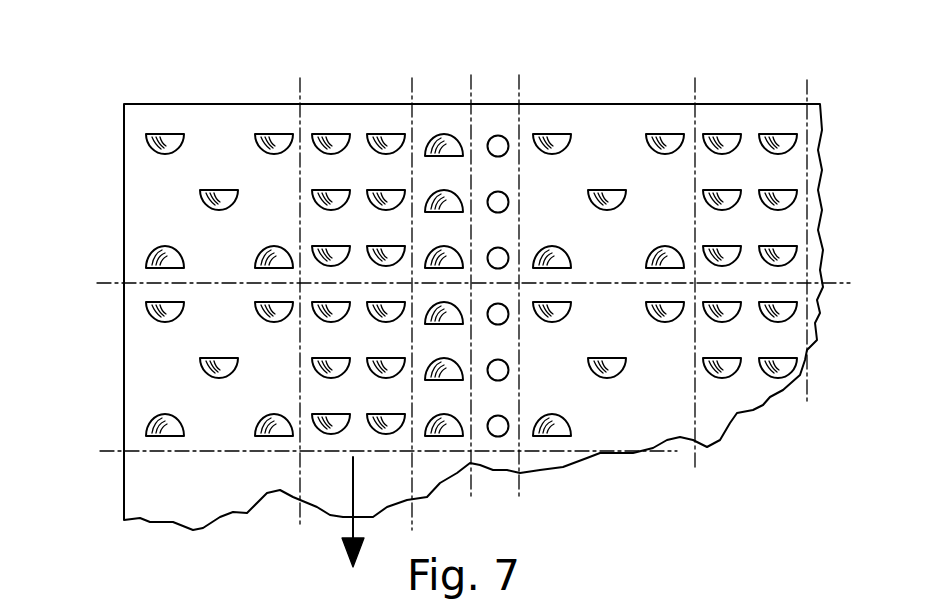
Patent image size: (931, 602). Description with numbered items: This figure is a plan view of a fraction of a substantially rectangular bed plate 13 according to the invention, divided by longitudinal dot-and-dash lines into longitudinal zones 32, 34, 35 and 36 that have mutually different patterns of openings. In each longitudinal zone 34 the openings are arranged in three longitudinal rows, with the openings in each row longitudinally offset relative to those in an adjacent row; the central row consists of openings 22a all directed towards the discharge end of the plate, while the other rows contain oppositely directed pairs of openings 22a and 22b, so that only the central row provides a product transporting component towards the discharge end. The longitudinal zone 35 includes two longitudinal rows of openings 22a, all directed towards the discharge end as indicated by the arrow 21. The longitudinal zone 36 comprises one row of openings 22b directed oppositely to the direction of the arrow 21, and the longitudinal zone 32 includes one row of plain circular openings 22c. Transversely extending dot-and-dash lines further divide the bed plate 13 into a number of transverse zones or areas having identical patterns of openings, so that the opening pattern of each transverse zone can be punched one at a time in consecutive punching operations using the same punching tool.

The bed plate 13 is at (140, 487).
The arrow 21 is at (348, 523).
The openings directed towards the discharge end 22a is at (273, 134).
The oppositely directed openings 22b is at (444, 134).
The plain circular openings 22c is at (498, 135).
The longitudinal zone 32 is at (507, 120).
The longitudinal zone 34 is at (212, 120).
The longitudinal zone 35 is at (339, 118).
The longitudinal zone 36 is at (458, 117).